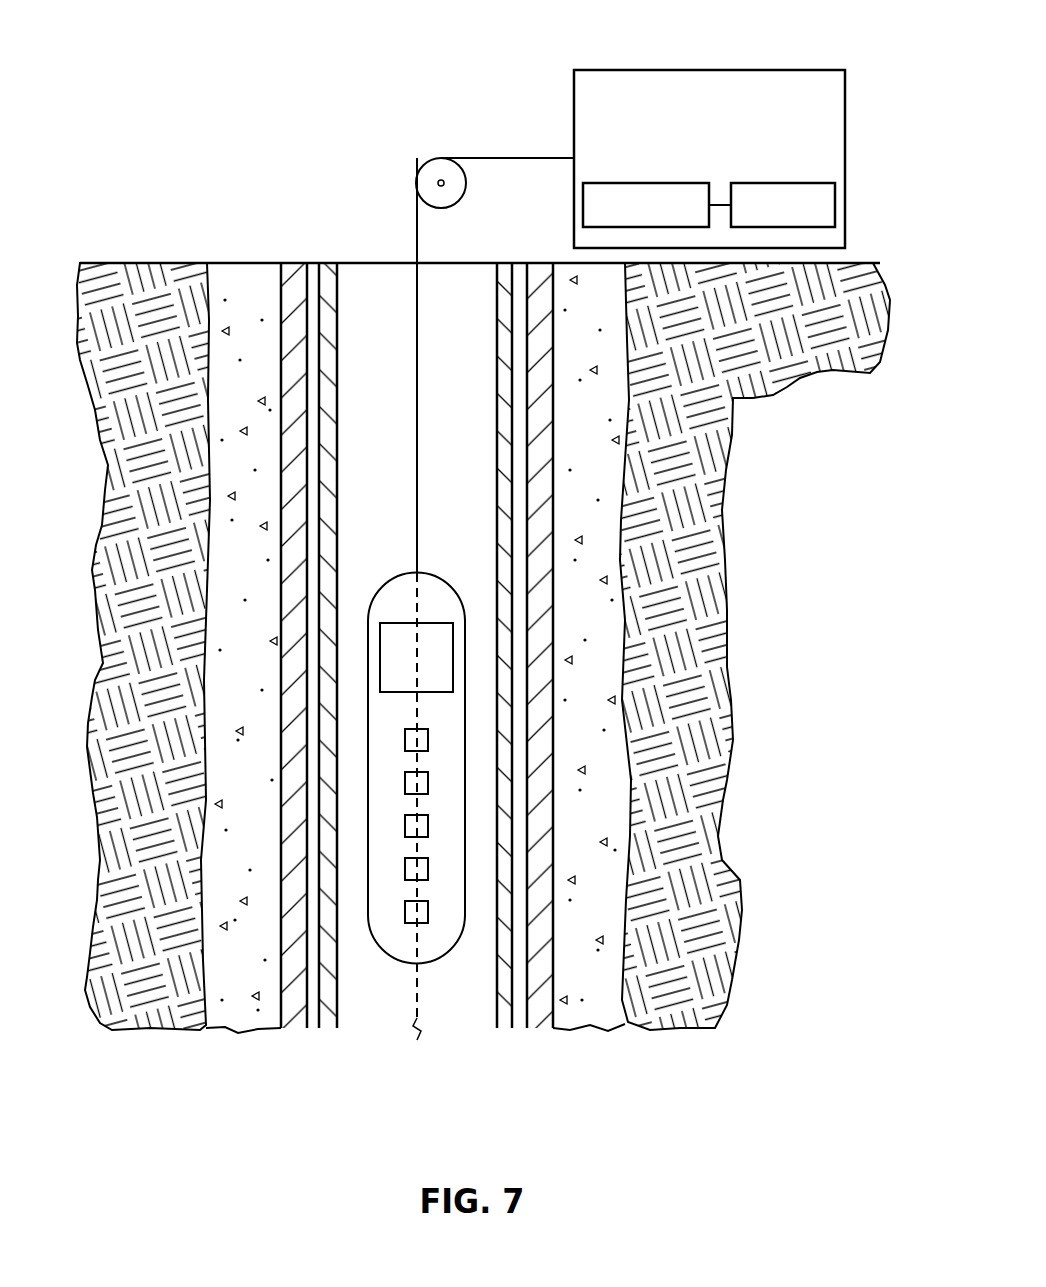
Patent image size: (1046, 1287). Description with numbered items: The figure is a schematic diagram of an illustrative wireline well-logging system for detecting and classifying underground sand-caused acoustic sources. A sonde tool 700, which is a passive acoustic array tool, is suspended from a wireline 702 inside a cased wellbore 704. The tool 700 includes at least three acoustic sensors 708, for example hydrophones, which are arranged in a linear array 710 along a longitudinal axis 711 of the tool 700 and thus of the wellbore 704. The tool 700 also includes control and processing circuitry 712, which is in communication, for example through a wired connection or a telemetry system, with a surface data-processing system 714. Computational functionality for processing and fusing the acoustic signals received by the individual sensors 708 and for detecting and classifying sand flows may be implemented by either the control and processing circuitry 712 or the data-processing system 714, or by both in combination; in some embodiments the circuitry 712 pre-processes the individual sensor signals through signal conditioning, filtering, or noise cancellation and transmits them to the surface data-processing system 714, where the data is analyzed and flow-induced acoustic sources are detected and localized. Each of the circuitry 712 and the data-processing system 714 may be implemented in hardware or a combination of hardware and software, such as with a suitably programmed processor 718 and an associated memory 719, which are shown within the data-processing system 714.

The sonde tool 700 is at (453, 579).
The wireline 702 is at (417, 468).
The cased wellbore 704 is at (336, 227).
The acoustic sensors 708 is at (428, 740).
The linear array 710 is at (817, 611).
The longitudinal axis 711 is at (417, 995).
The control and processing circuitry 712 is at (453, 666).
The surface data-processing system 714 is at (680, 70).
The processor 718 is at (683, 183).
The memory 719 is at (803, 183).